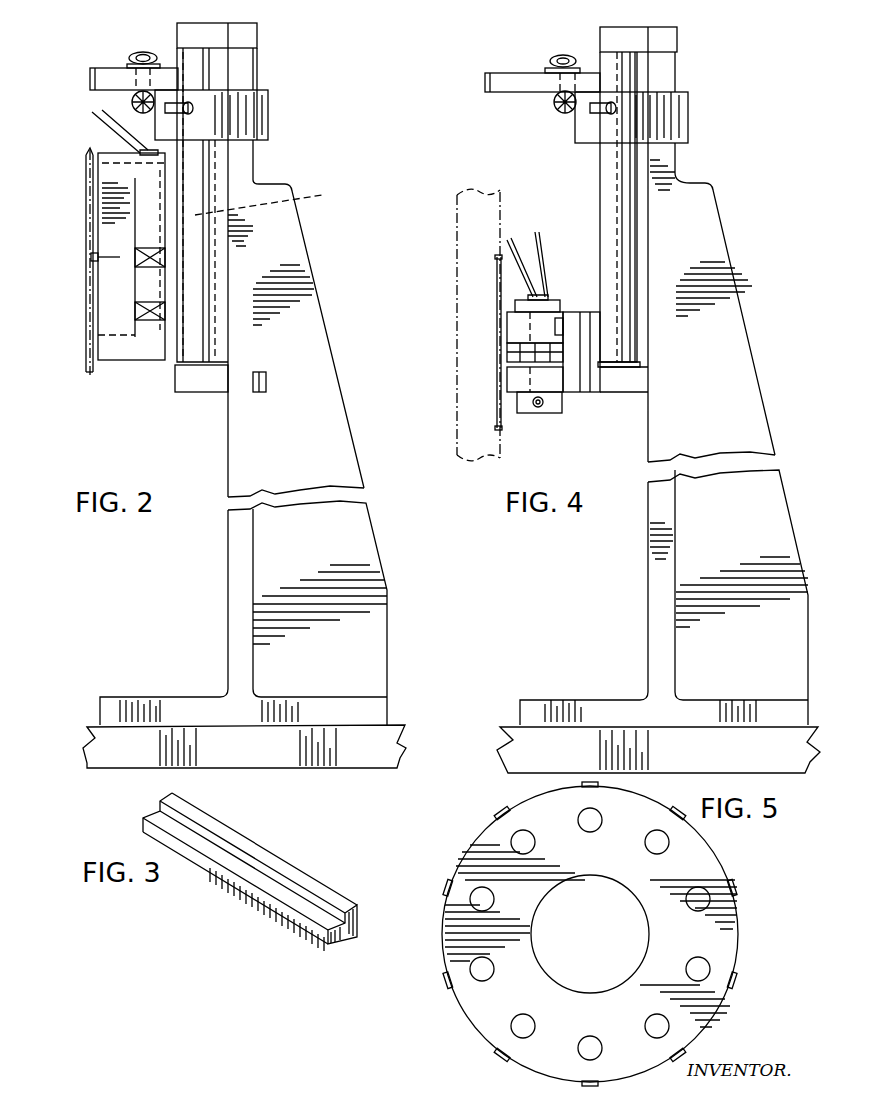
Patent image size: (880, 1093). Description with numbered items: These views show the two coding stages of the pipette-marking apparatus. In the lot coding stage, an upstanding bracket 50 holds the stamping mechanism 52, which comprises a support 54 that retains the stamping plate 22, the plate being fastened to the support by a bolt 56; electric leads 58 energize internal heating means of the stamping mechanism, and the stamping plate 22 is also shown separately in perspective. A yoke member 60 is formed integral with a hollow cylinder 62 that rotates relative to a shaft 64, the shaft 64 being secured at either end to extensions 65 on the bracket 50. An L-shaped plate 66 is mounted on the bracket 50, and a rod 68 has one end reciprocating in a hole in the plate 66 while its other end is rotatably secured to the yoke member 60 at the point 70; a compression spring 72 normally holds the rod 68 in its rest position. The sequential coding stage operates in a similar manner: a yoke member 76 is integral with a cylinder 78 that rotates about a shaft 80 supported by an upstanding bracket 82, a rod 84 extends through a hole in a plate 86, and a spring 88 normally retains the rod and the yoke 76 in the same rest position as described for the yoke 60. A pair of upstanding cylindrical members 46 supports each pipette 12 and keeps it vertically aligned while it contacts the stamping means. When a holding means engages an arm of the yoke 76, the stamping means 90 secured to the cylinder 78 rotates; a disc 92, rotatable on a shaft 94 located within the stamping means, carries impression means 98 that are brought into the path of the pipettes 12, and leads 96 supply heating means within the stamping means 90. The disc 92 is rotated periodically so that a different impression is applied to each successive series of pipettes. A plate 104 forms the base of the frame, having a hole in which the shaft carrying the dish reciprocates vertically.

In FIG. 2, the pipette 12 is at (80, 335).
In FIG. 4, the pipette 12 is at (504, 420).
In FIG. 2, the stamping plate 22 is at (92, 313).
In FIG. 3, the stamping plate 22 is at (321, 877).
In FIG. 4, the upstanding cylindrical member 46 is at (462, 332).
In FIG. 2, the upstanding bracket 50 is at (354, 637).
In FIG. 2, the stamping mechanism 52 is at (53, 145).
In FIG. 2, the support 54 is at (110, 222).
In FIG. 2, the bolt 56 is at (91, 257).
In FIG. 2, the electric leads 58 is at (122, 132).
In FIG. 2, the yoke member 60 is at (100, 78).
In FIG. 2, the hollow cylinder 62 is at (210, 173).
In FIG. 2, the shaft 64 is at (272, 198).
In FIG. 2, the extension 65 is at (193, 390).
In FIG. 2, the L-shaped plate 66 is at (268, 103).
In FIG. 2, the rod 68 is at (148, 115).
In FIG. 2, the point 70 is at (143, 53).
In FIG. 2, the compression spring 72 is at (133, 101).
In FIG. 4, the yoke member 76 is at (500, 80).
In FIG. 4, the cylinder 78 is at (610, 197).
In FIG. 4, the shaft 80 is at (612, 52).
In FIG. 4, the upstanding bracket 82 is at (740, 345).
In FIG. 4, the rod 84 is at (557, 98).
In FIG. 4, the plate 86 is at (678, 115).
In FIG. 4, the spring 88 is at (568, 117).
In FIG. 4, the stamping means 90 is at (520, 380).
In FIG. 4, the disc 92 is at (510, 347).
In FIG. 5, the disc 92 is at (485, 1016).
In FIG. 4, the shaft 94 is at (540, 413).
In FIG. 4, the leads 96 is at (543, 250).
In FIG. 5, the impression means 98 is at (447, 882).
In FIG. 2, the plate 104 is at (370, 757).